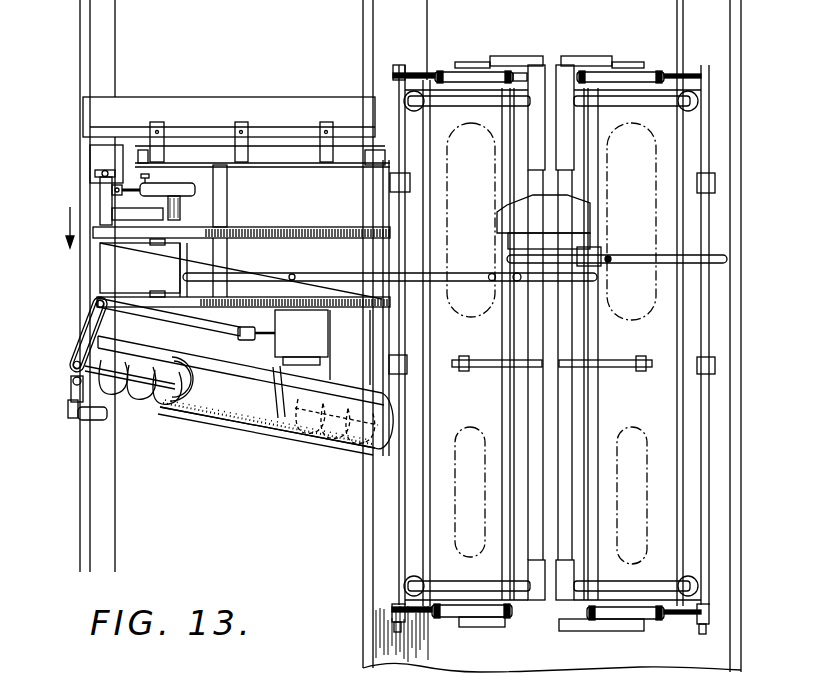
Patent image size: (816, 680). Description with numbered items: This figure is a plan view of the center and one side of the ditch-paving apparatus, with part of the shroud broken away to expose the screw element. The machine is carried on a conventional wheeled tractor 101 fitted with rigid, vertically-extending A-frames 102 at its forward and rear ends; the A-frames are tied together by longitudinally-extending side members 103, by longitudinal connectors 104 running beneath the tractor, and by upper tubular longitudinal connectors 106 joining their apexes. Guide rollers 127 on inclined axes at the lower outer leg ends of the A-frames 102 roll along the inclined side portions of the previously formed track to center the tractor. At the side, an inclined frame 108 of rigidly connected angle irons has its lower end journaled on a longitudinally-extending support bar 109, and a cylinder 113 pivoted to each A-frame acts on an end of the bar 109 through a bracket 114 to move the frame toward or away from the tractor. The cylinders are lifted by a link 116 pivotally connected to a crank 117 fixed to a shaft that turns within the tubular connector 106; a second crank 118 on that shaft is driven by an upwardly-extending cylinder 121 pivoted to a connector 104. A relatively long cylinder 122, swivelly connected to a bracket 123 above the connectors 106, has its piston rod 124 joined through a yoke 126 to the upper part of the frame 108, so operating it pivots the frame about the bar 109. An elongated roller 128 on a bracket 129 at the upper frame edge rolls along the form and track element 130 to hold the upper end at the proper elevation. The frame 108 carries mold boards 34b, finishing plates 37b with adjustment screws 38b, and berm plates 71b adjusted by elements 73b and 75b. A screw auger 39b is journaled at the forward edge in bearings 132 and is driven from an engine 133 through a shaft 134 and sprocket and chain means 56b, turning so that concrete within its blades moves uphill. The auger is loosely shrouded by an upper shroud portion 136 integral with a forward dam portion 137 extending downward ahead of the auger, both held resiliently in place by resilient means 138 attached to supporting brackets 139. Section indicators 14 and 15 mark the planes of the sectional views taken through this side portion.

The finishing plate 37b is at (186, 98).
The adjustment screw 38b is at (246, 126).
The berm plate 71b is at (97, 157).
The adjusting element 75b is at (97, 186).
The adjusting element 73b is at (193, 186).
The inclined frame 108 is at (220, 208).
The mold board 34b is at (103, 269).
The yoke 126 is at (175, 253).
The piston rod 124 is at (286, 266).
The hydraulic cylinder 122 is at (354, 273).
The engine 133 is at (301, 337).
The shaft 134 is at (197, 331).
The sprocket and chain means 56b is at (88, 340).
The bearing 132 is at (75, 381).
The bracket 129 is at (72, 399).
The elongated roller 128 is at (100, 427).
The upper shroud portion 136 is at (223, 388).
The forward dam portion 137 is at (188, 421).
The resilient means 138 is at (260, 422).
The supporting bracket 139 is at (283, 446).
The screw auger 39b is at (140, 400).
The form and track element 130 is at (82, 537).
The section line 14 is at (342, 356).
The section line 15 is at (300, 407).
The support bar 109 is at (709, 18).
The side member 103 is at (426, 328).
The bracket 114 is at (404, 66).
The hydraulic cylinder 113 is at (651, 76).
The crank 117 is at (587, 60).
The link 116 is at (480, 629).
The A-frame 102 is at (440, 108).
The guide roller 127 is at (410, 594).
The upper tubular longitudinal connector 106 is at (563, 176).
The longitudinal connector 104 is at (596, 192).
The wheeled tractor 101 is at (645, 440).
The hydraulic cylinder 121 is at (492, 360).
The second crank 118 is at (473, 371).
The bracket 123 is at (608, 261).